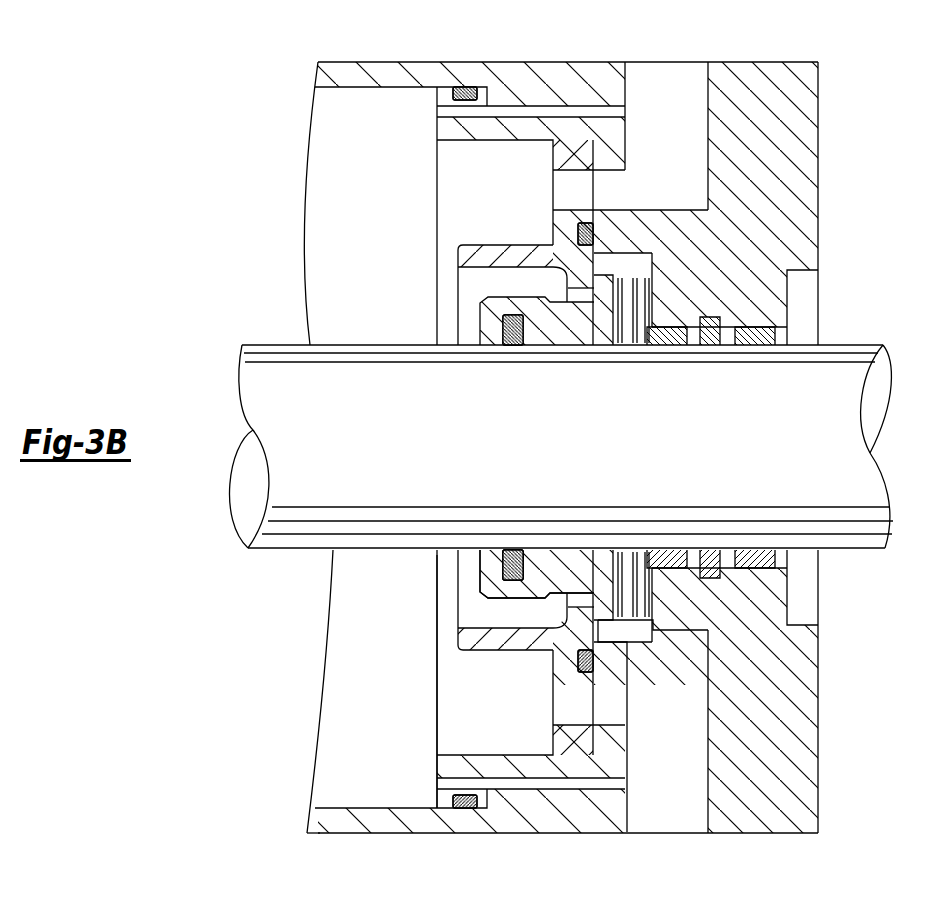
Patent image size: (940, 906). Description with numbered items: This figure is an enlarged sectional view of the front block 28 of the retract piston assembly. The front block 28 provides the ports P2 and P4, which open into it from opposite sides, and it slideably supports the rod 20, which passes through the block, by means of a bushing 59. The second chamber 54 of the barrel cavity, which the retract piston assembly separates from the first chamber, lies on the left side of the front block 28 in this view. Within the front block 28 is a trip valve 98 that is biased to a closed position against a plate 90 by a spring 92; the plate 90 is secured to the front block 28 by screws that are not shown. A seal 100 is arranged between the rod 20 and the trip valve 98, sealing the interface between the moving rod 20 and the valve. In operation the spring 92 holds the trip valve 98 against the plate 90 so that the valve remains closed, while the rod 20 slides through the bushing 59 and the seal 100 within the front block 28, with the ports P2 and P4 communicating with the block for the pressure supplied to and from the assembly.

The rod 20 is at (599, 434).
The front block 28 is at (795, 176).
The second chamber 54 is at (371, 623).
The bushing 59 is at (665, 345).
The plate 90 is at (565, 233).
The spring 92 is at (631, 286).
The trip valve 98 is at (572, 552).
The seal 100 is at (513, 346).
The port P2 is at (677, 767).
The port P4 is at (665, 122).